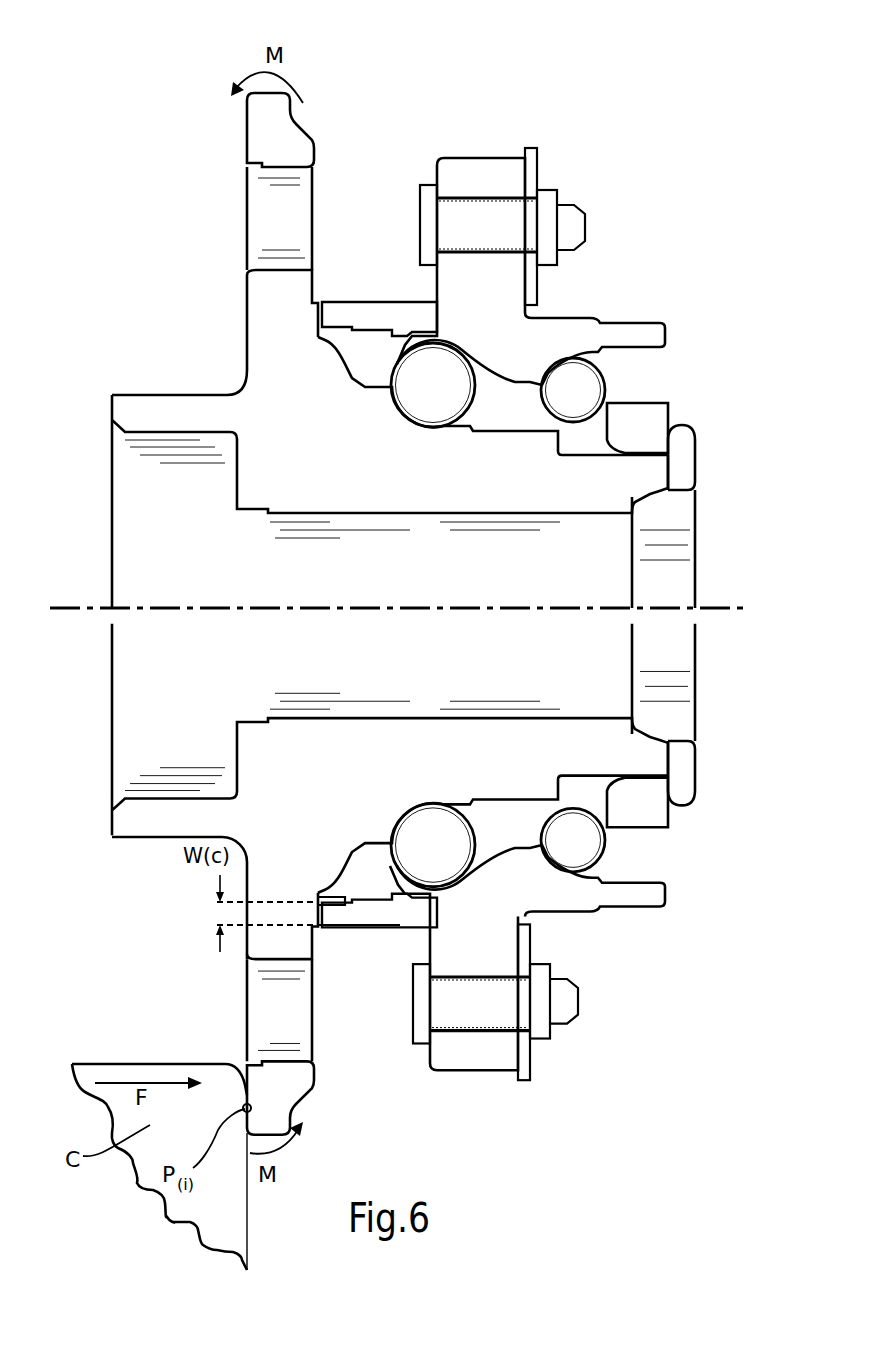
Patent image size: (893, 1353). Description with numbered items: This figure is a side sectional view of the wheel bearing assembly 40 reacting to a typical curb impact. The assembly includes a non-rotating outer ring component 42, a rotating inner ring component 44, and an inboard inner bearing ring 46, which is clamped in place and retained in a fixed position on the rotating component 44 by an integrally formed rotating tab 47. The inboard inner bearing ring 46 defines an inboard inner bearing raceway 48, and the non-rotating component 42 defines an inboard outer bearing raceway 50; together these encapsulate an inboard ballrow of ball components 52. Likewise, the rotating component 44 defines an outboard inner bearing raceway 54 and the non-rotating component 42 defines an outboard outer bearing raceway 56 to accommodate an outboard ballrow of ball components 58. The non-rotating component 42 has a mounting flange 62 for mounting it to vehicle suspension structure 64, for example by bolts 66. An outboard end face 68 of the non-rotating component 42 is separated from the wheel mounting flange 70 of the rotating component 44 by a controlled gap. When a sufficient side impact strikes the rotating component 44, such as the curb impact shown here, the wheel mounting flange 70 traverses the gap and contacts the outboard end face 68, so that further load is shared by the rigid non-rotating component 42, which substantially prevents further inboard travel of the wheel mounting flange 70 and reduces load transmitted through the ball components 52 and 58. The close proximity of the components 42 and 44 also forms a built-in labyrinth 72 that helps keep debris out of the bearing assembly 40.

The wheel bearing assembly 40 is at (186, 50).
The non-rotating outer ring component 42 is at (480, 158).
The rotating inner ring component 44 is at (294, 425).
The inboard inner bearing ring 46 is at (657, 417).
The rotating tab 47 is at (678, 462).
The inboard inner bearing raceway 48 is at (577, 432).
The inboard outer bearing raceway 50 is at (591, 322).
The inboard ballrow ball components 52 is at (587, 388).
The outboard inner bearing raceway 54 is at (408, 423).
The outboard outer bearing raceway 56 is at (457, 340).
The outboard ballrow ball components 58 is at (423, 380).
The mounting flange 62 is at (489, 170).
The vehicle suspension structure 64 is at (532, 157).
The bolts 66 is at (528, 225).
The outboard end face 68 is at (368, 895).
The wheel mounting flange 70 is at (285, 1085).
The labyrinth 72 is at (334, 891).